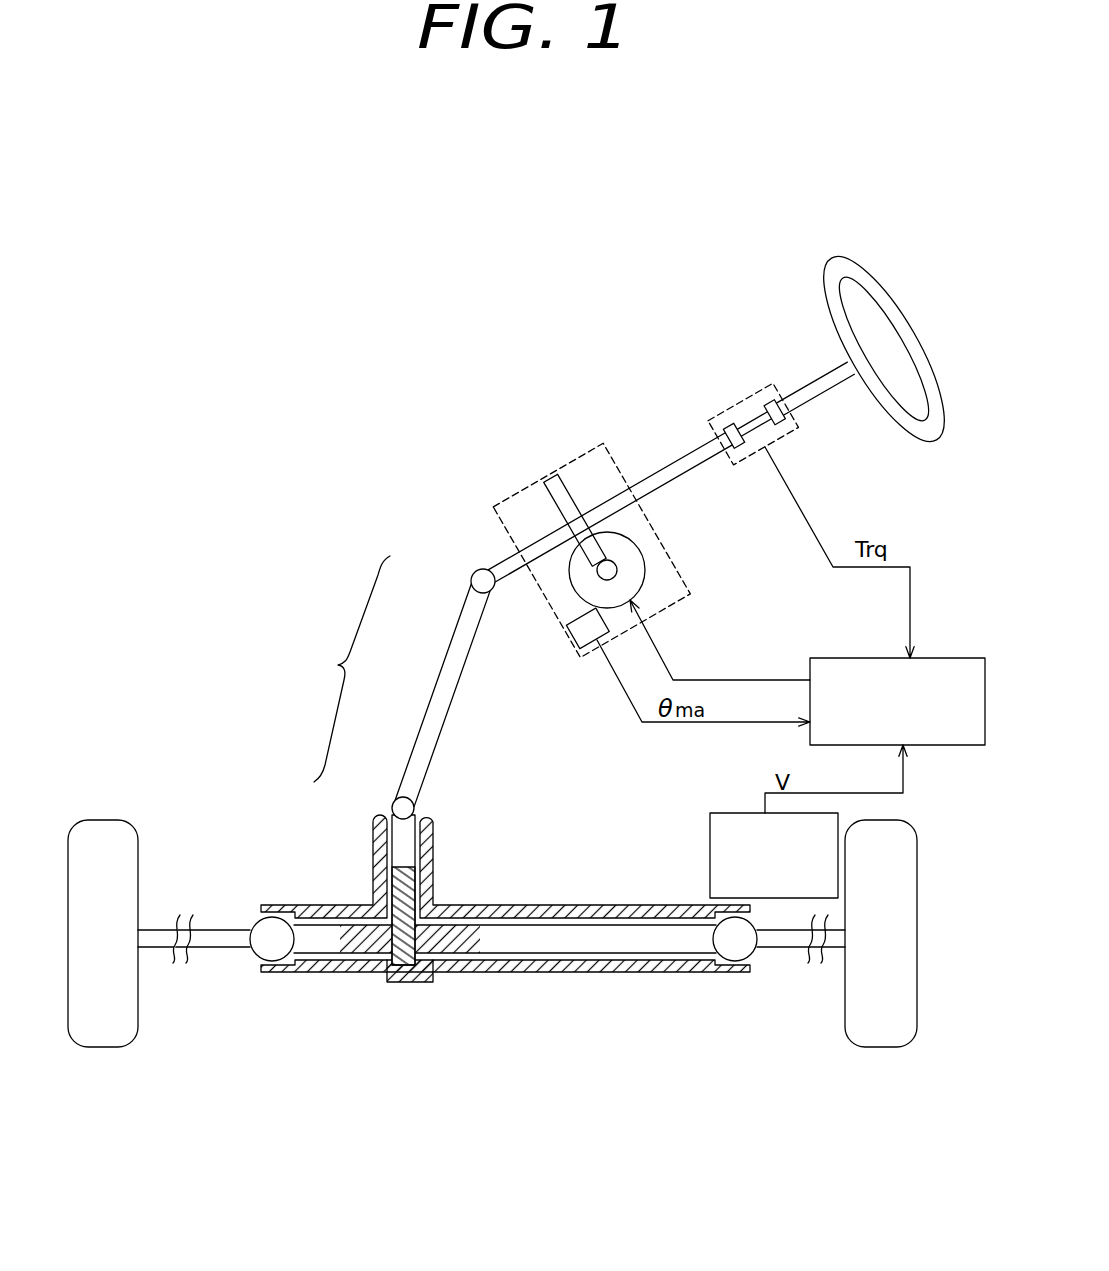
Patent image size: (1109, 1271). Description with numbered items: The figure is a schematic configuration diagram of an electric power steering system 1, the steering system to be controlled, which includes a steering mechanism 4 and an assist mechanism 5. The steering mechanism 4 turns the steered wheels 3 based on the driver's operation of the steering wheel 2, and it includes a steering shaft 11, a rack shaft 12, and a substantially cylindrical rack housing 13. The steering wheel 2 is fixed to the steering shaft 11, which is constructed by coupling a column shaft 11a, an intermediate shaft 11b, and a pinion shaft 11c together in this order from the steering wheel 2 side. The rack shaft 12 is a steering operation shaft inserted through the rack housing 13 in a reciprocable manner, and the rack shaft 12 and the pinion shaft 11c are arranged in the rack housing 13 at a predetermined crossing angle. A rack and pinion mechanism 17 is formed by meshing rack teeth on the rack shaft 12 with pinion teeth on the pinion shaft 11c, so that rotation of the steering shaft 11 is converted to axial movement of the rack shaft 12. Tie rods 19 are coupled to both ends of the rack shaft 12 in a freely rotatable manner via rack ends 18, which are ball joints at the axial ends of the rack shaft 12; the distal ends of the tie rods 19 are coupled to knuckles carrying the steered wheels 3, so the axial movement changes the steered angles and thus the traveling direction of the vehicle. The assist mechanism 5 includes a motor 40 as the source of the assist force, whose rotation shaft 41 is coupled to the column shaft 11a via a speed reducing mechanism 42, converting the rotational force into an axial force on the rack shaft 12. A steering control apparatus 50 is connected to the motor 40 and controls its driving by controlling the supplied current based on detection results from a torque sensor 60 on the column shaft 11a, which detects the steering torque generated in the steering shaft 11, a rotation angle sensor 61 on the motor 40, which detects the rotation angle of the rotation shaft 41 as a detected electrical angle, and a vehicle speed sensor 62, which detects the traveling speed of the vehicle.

The electric power steering system 1 is at (285, 341).
The steering wheel 2 is at (851, 258).
The steered wheels 3 is at (105, 1040).
The steering mechanism 4 is at (328, 536).
The assist mechanism 5 is at (586, 445).
The steering shaft 11 is at (579, 572).
The column shaft 11a is at (470, 576).
The intermediate shaft 11b is at (445, 668).
The pinion shaft 11c is at (398, 835).
The rack shaft 12 is at (530, 926).
The rack housing 13 is at (470, 904).
The rack and pinion mechanism 17 is at (382, 978).
The rack ends 18 is at (262, 956).
The tie rods 19 is at (208, 948).
The motor 40 is at (645, 556).
The rotation shaft 41 is at (620, 566).
The speed reducing mechanism 42 is at (553, 492).
The steering control apparatus 50 is at (958, 658).
The torque sensor 60 is at (743, 402).
The rotation angle sensor 61 is at (569, 632).
The vehicle speed sensor 62 is at (727, 813).